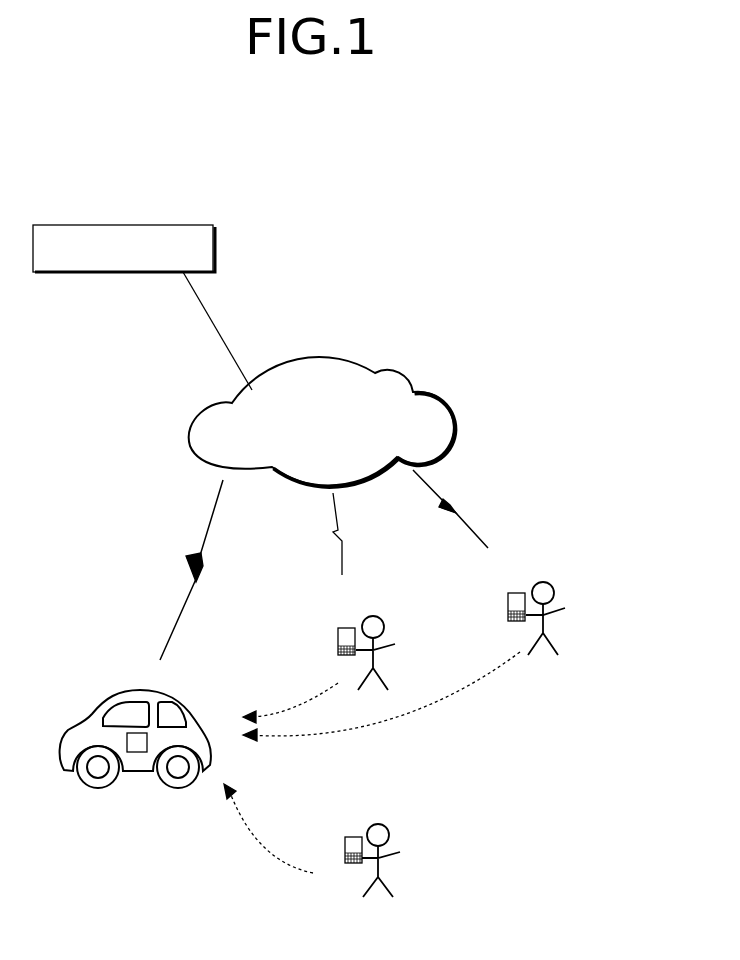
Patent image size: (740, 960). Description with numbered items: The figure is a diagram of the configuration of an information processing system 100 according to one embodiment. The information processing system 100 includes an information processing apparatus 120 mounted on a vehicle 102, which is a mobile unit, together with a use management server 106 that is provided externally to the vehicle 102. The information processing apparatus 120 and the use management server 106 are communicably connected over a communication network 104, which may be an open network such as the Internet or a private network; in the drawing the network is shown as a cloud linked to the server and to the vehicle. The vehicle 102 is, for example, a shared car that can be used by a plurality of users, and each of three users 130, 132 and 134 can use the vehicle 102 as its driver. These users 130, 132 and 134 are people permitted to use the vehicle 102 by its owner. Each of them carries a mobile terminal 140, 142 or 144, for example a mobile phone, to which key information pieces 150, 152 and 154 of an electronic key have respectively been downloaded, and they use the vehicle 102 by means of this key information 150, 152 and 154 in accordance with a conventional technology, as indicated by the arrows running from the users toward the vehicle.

The information processing system 100 is at (373, 228).
The vehicle 102 is at (123, 752).
The communication network 104 is at (278, 387).
The use management server 106 is at (66, 224).
The information processing apparatus 120 is at (141, 752).
The user 130 is at (385, 826).
The user 132 is at (380, 618).
The user 134 is at (550, 584).
The mobile terminal 140 is at (333, 830).
The mobile terminal 142 is at (324, 621).
The mobile terminal 144 is at (495, 588).
The key information piece 150 is at (345, 856).
The key information piece 152 is at (338, 647).
The key information piece 154 is at (515, 574).